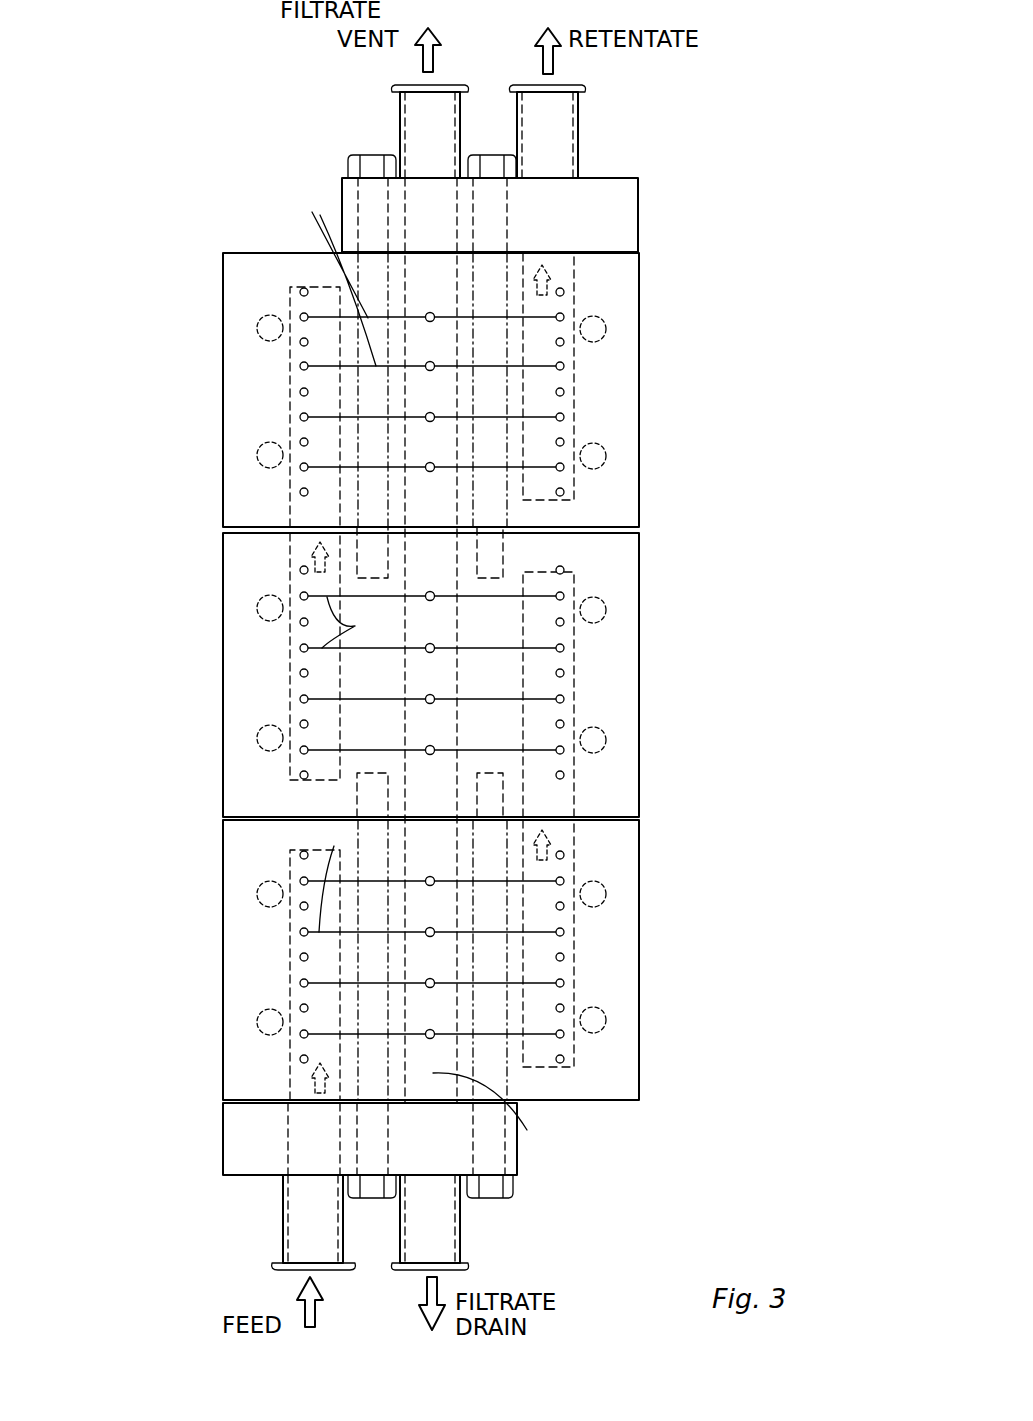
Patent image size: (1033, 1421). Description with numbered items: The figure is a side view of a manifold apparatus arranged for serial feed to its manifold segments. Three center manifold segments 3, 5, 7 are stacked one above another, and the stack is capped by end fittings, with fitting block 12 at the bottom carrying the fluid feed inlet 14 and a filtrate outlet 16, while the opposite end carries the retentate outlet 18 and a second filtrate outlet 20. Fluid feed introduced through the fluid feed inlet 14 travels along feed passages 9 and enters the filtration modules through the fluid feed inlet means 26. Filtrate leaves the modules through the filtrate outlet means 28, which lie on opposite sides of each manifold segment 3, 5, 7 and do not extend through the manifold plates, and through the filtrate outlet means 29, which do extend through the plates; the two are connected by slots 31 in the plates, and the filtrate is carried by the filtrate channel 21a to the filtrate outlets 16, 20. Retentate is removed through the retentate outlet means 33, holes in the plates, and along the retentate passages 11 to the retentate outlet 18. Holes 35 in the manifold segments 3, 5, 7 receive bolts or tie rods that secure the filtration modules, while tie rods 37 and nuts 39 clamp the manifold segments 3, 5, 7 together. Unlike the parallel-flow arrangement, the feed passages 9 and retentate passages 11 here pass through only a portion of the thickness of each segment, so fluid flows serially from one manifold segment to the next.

The manifold segment 3 is at (645, 408).
The manifold segment 5 is at (645, 715).
The manifold segment 7 is at (645, 1050).
The feed passage 9 is at (340, 283).
The retentate passage 11 is at (596, 252).
The fitting block 12 is at (223, 1135).
The fluid feed inlet 14 is at (283, 1204).
The filtrate outlet 16 is at (460, 1229).
The retentate outlet 18 is at (580, 126).
The filtrate outlet 20 is at (400, 130).
The filtrate channel 21a is at (505, 1113).
The fluid feed inlet means 26 is at (300, 290).
The filtrate outlet means 28 is at (300, 315).
The filtrate outlet means 29 is at (430, 467).
The slot 31 is at (341, 557).
The retentate outlet means 33 is at (564, 292).
The hole 35 is at (260, 325).
The tie rod 37 is at (390, 207).
The nut 39 is at (348, 165).